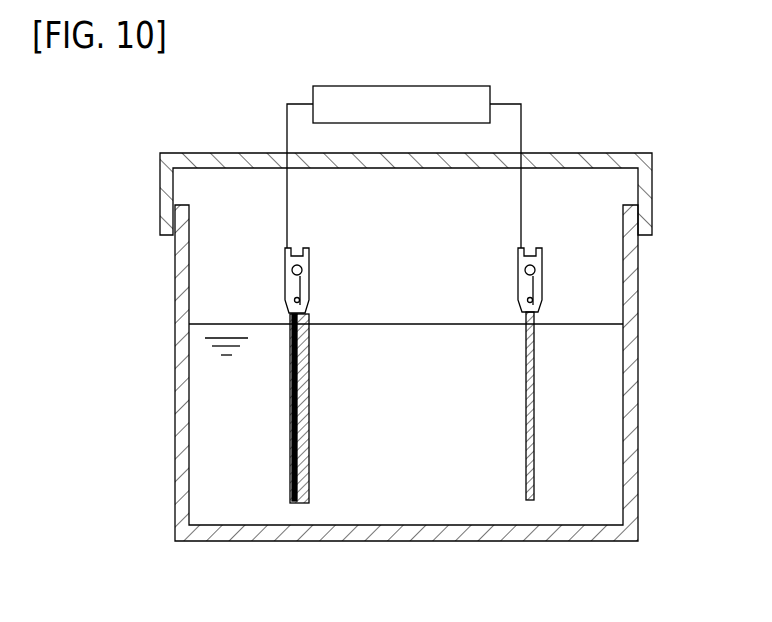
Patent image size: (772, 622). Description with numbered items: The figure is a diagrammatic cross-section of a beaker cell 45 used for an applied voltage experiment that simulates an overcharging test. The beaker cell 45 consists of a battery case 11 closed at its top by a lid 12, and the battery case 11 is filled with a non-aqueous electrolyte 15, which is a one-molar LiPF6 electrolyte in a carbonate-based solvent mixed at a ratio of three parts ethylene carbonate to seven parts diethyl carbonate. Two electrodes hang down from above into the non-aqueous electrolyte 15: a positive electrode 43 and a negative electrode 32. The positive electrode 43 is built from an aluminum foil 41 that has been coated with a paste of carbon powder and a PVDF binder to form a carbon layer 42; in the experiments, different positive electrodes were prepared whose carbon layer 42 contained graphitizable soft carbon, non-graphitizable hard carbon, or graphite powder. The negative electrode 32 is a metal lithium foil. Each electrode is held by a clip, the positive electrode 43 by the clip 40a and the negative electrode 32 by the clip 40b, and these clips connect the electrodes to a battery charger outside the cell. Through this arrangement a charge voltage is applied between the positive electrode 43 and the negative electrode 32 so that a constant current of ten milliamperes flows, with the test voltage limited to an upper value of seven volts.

The beaker cell 45 is at (641, 141).
The lid 12 is at (562, 162).
The battery case 11 is at (628, 462).
The non-aqueous electrolyte 15 is at (583, 401).
The clip 40a is at (277, 257).
The clip 40b is at (543, 289).
The aluminum foil 41 is at (292, 487).
The carbon layer 42 is at (304, 501).
The positive electrode 43 is at (338, 570).
The negative electrode 32 is at (535, 462).